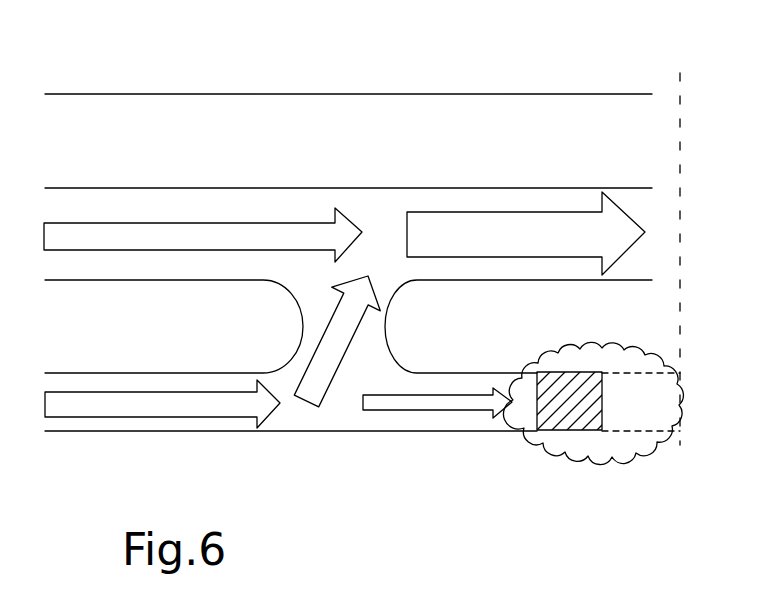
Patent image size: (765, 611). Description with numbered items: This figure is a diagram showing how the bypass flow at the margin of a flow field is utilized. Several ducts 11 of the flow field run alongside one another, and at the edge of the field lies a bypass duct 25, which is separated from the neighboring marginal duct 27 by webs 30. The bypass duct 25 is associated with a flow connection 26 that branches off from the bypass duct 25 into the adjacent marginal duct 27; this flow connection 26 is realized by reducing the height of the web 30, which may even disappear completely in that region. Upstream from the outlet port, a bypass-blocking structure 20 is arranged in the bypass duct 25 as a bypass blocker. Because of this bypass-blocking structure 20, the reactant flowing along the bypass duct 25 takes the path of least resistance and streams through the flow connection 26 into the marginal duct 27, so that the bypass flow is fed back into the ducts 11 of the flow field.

The duct 11 is at (89, 133).
The marginal duct 27 is at (95, 267).
The web 30 is at (212, 341).
The bypass duct 25 is at (210, 420).
The flow connection 26 is at (372, 323).
The bypass-blocking structure 20 is at (578, 412).